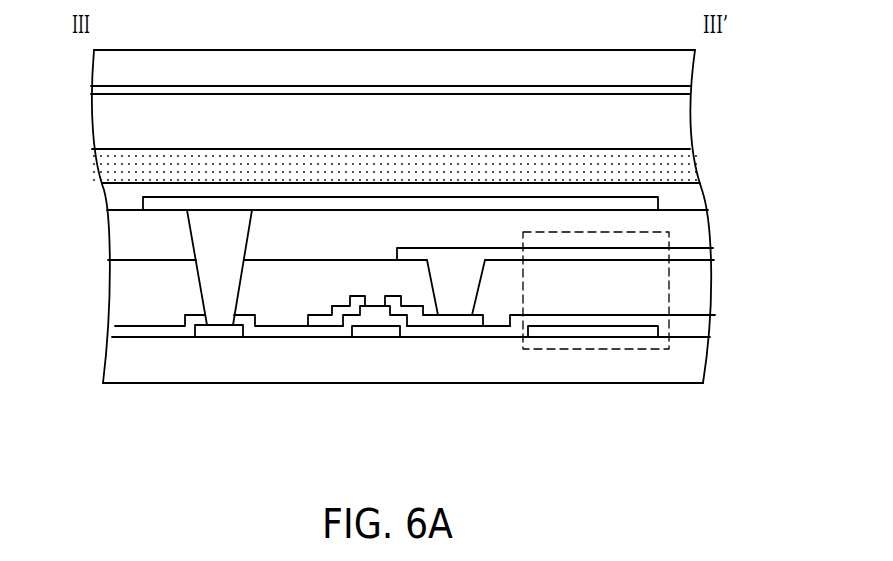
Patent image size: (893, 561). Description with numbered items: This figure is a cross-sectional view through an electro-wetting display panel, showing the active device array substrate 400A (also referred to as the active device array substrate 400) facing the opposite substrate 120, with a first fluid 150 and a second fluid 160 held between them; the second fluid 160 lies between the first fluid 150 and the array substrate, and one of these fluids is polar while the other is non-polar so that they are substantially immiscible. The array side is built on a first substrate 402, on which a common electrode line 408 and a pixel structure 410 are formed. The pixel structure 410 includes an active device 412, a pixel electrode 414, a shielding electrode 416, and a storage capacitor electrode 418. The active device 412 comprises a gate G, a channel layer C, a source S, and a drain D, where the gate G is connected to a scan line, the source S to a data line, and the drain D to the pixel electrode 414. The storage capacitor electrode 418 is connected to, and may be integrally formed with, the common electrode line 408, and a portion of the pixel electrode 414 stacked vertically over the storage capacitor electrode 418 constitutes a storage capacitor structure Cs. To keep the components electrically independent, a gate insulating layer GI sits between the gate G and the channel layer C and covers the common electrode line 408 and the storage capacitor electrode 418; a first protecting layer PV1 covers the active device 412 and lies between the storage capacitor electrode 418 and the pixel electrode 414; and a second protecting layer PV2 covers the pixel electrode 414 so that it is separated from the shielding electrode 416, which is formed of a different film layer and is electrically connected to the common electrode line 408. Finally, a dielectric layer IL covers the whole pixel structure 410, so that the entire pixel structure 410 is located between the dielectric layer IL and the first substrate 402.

The opposite substrate 120 is at (83, 50).
The first fluid 150 is at (122, 119).
The second fluid 160 is at (122, 168).
The dielectric layer IL is at (130, 203).
The shielding electrode 416 is at (285, 203).
The second protecting layer PV2 is at (117, 232).
The first protecting layer PV1 is at (248, 288).
The pixel electrode 414 is at (462, 258).
The gate insulating layer GI is at (166, 330).
The common electrode line 408 is at (210, 330).
The active device 412 is at (395, 379).
The source S is at (322, 318).
The gate G is at (358, 330).
The channel layer C is at (378, 312).
The drain D is at (405, 315).
The storage capacitor electrode 418 is at (552, 330).
The pixel structure 410 is at (568, 457).
The first substrate 402 is at (133, 360).
The storage capacitor structure Cs is at (610, 350).
The active device array substrate 400A is at (721, 183).
The active device array substrate 400 is at (730, 473).